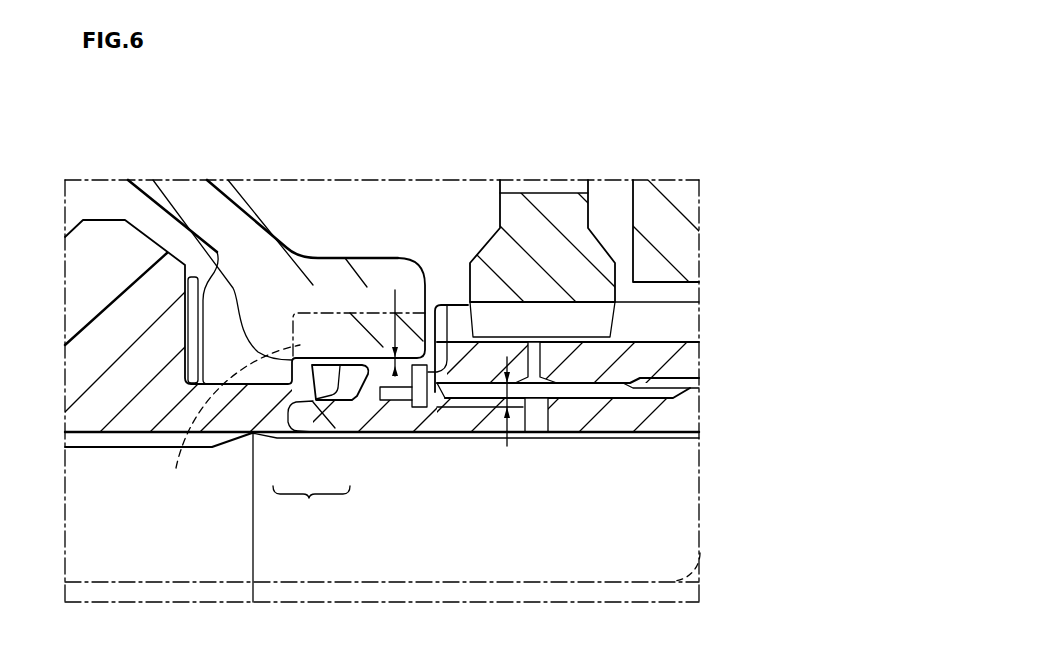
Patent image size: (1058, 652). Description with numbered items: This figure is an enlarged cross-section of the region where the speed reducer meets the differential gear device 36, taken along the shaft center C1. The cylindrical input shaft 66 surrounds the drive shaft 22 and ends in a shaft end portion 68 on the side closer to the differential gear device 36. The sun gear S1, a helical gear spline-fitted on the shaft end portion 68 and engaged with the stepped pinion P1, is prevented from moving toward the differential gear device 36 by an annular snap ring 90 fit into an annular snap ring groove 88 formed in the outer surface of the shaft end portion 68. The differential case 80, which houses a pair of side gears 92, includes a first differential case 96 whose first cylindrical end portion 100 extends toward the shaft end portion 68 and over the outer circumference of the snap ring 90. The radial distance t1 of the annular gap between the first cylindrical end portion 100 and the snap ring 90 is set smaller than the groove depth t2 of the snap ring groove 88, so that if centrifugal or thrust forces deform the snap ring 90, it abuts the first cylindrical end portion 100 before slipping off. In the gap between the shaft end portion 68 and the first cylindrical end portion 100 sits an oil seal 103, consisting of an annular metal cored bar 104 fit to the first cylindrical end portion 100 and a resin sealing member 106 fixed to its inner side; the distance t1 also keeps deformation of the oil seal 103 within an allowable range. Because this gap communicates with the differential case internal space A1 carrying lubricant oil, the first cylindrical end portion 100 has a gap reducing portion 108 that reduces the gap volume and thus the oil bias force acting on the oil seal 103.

The drive shaft 22 is at (690, 499).
The differential gear device 36 is at (252, 202).
The input shaft 66 is at (692, 420).
The shaft end portion 68 is at (399, 422).
The differential case 80 is at (210, 255).
The first differential case 96 is at (172, 186).
The snap ring groove 88 is at (445, 398).
The snap ring 90 is at (450, 305).
The side gear 92 is at (92, 232).
The first cylindrical end portion 100 is at (360, 268).
The oil seal 103 is at (311, 506).
The cored bar 104 is at (296, 406).
The sealing member 106 is at (337, 402).
The gap reducing portion 108 is at (176, 468).
The radial distance t1 is at (386, 333).
The groove depth t2 is at (519, 412).
The differential case internal space A1 is at (103, 190).
The stepped pinion P1 is at (578, 230).
The sun gear S1 is at (692, 360).
The shaft center C1 is at (700, 553).